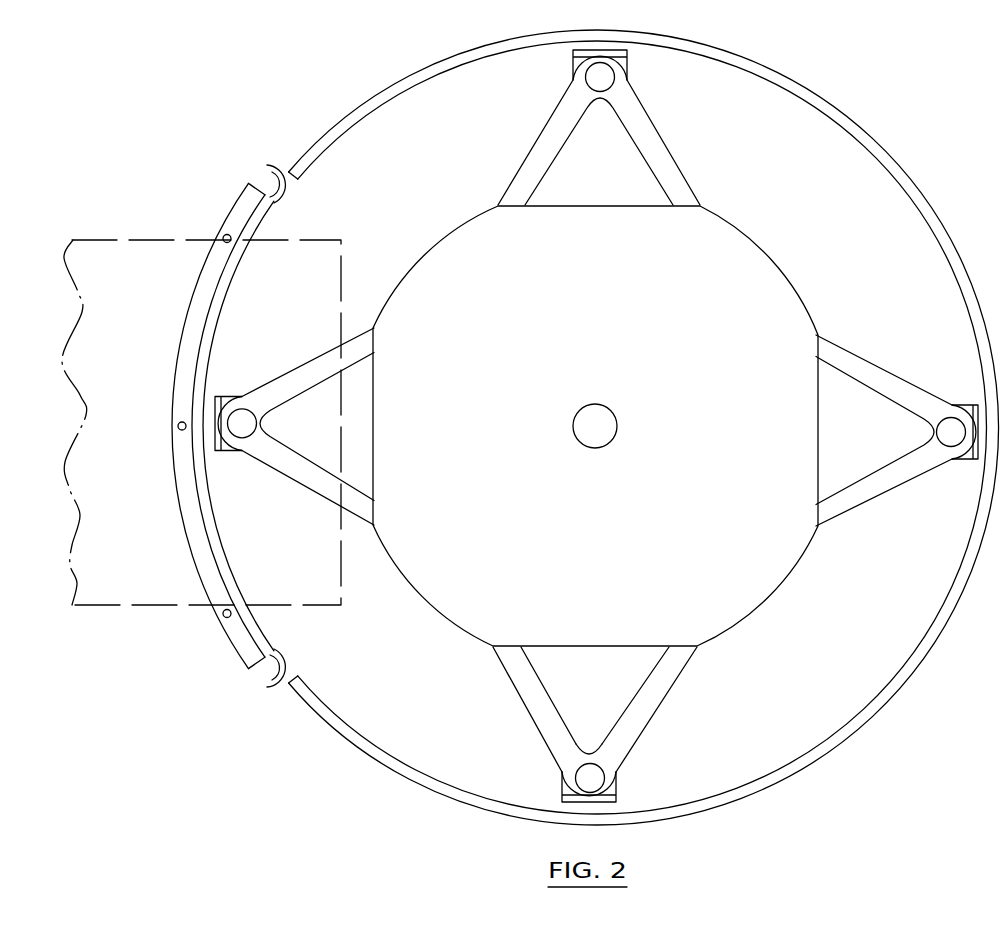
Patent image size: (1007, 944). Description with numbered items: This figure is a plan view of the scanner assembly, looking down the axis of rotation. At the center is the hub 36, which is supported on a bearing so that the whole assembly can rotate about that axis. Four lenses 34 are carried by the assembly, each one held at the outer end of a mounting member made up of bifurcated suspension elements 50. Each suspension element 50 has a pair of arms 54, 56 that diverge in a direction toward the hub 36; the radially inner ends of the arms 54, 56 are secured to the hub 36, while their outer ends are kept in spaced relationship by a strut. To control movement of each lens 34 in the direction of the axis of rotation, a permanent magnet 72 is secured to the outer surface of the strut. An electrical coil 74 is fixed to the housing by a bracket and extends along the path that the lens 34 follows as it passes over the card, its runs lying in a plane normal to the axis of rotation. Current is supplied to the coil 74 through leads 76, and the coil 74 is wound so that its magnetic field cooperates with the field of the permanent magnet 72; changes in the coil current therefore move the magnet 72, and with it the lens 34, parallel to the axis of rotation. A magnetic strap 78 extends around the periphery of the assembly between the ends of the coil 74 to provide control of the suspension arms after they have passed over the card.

The lens 34 is at (598, 77).
The central hub 36 is at (595, 426).
The bifurcated suspension element 50 is at (607, 721).
The arm 54 is at (637, 727).
The arm 56 is at (538, 709).
The permanent magnet 72 is at (231, 396).
The electrical coil 74 is at (222, 251).
The leads 76 is at (268, 163).
The magnetic strap 78 is at (893, 688).